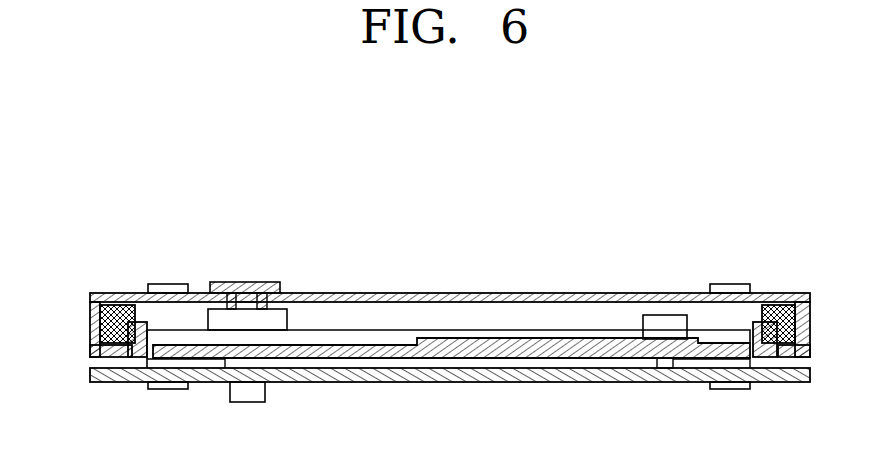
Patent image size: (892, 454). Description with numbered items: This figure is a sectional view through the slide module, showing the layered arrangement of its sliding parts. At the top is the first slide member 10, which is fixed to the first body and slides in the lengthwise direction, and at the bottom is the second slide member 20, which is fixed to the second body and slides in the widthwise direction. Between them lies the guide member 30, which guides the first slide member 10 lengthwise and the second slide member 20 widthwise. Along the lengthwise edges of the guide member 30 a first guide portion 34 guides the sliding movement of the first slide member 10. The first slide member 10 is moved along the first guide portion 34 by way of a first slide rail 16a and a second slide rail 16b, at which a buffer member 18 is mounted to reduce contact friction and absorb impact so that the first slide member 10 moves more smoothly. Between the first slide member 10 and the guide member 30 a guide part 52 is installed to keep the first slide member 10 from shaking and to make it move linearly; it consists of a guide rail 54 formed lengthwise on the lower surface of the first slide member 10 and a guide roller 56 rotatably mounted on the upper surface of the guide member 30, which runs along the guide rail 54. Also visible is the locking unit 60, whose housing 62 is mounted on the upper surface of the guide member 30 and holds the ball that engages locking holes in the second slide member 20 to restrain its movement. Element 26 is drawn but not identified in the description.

The first slide member 10 is at (515, 293).
The first slide rail 16a is at (810, 312).
The second slide rail 16b is at (92, 346).
The buffer member 18 is at (100, 317).
The second slide member 20 is at (540, 368).
The display panel 26 is at (327, 330).
The guide member 30 is at (448, 345).
The first guide portion 34 is at (125, 357).
The guide part 52 is at (249, 261).
The guide rail 54 is at (233, 296).
The guide roller 56 is at (270, 296).
The locking unit 60 is at (657, 360).
The housing 62 is at (665, 333).